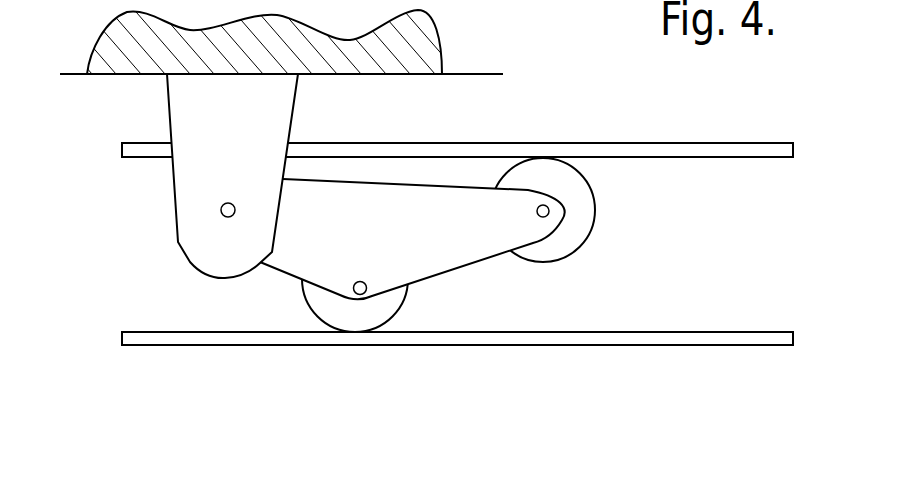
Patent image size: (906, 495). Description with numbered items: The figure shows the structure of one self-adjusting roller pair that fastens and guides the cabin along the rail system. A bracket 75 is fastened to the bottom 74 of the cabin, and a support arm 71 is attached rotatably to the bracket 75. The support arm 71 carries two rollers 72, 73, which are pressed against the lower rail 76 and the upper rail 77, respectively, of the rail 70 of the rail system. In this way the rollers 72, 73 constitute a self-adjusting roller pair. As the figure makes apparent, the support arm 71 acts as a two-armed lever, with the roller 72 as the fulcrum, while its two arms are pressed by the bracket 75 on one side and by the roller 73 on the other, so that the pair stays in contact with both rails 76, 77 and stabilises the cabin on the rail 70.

The rail 70 is at (728, 190).
The support arm 71 is at (412, 239).
The roller 72 is at (387, 306).
The roller 73 is at (578, 211).
The bottom of the cabin 74 is at (397, 49).
The bracket 75 is at (232, 176).
The lower rail 76 is at (607, 337).
The upper rail 77 is at (623, 150).